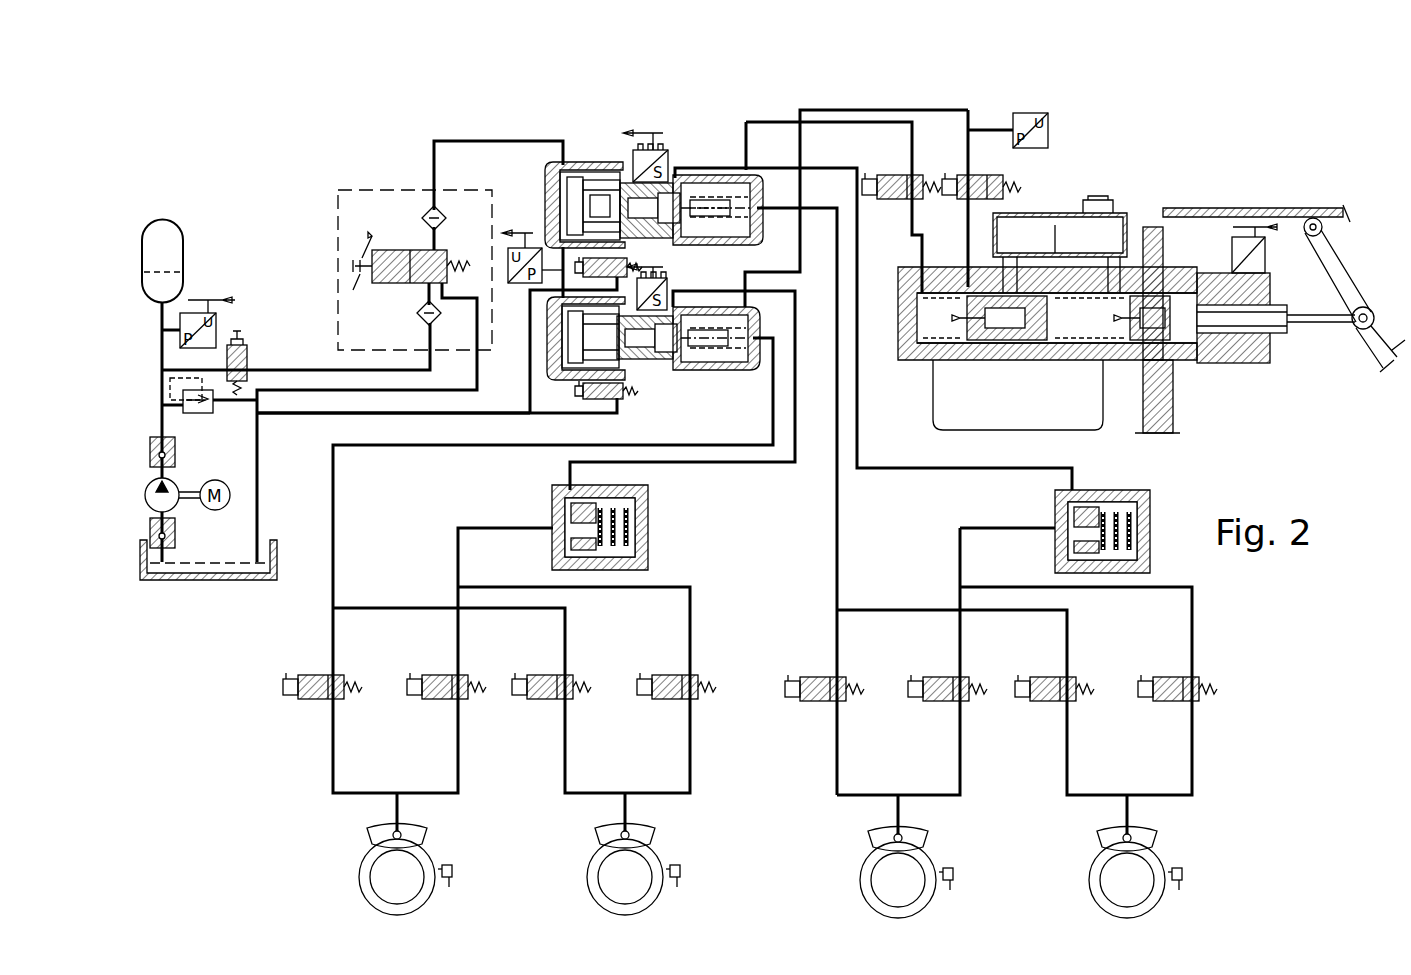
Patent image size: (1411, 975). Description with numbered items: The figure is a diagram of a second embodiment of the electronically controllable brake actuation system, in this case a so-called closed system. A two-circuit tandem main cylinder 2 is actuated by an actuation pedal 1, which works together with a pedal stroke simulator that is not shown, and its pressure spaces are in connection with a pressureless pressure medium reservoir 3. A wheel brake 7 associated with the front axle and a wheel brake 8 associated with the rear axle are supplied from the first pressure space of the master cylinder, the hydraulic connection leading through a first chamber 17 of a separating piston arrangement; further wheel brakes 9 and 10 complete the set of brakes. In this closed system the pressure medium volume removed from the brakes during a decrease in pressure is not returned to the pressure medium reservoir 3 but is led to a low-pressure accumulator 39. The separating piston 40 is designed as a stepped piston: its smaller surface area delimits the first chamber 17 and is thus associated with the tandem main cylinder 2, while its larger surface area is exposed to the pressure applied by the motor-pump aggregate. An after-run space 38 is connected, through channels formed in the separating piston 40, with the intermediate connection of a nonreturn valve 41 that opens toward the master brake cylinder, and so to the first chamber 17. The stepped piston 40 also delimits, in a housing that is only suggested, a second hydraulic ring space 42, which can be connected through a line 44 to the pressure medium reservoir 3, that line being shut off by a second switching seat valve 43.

The actuation pedal 1 is at (1340, 278).
The tandem main cylinder 2 is at (1130, 260).
The pressure medium reservoir 3 is at (214, 582).
The wheel brake 7 is at (413, 838).
The wheel brake 8 is at (641, 838).
The wheel brake 9 is at (913, 841).
The wheel brake 10 is at (1142, 843).
The first chamber 17 is at (730, 228).
The after-run space 38 is at (686, 249).
The low-pressure accumulator 39 is at (648, 528).
The separating piston 40 is at (598, 205).
The nonreturn valve 41 is at (690, 188).
The second hydraulic ring space 42 is at (632, 242).
The second switching seat valve 43 is at (577, 268).
The line 44 is at (503, 412).